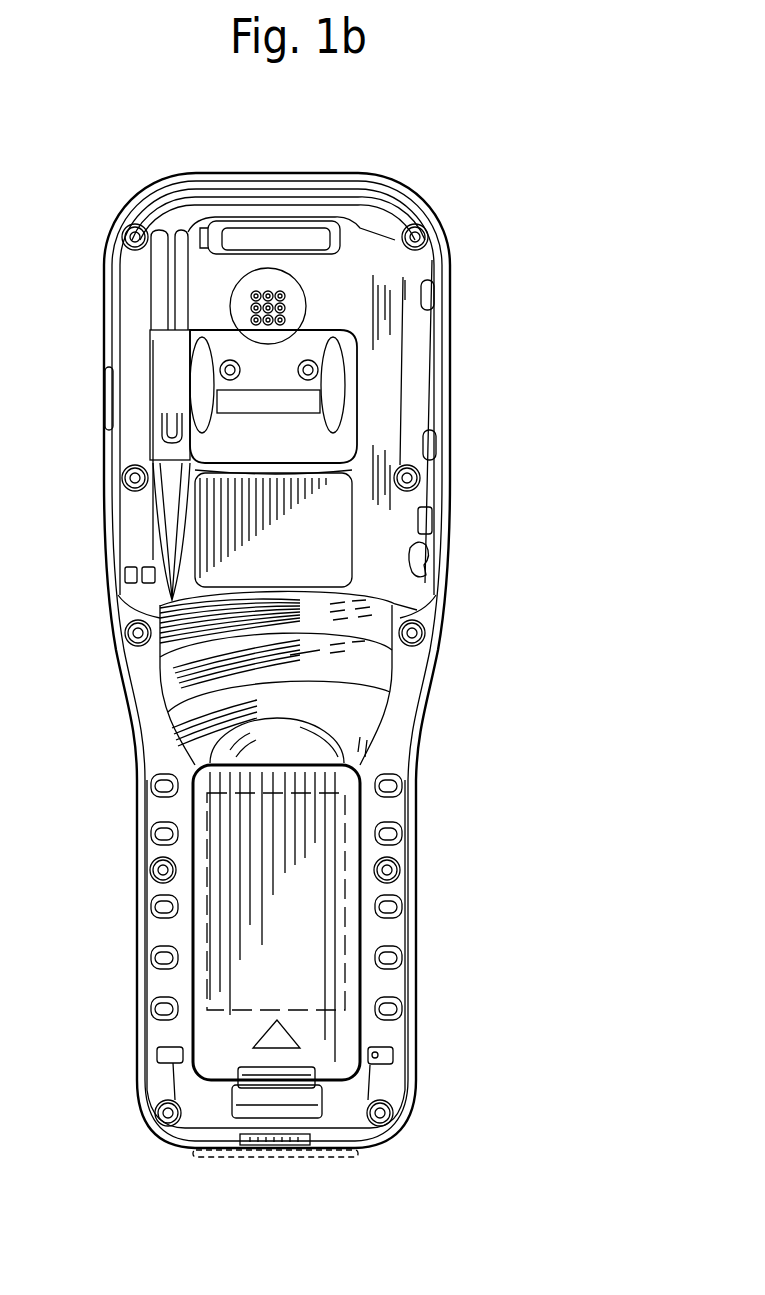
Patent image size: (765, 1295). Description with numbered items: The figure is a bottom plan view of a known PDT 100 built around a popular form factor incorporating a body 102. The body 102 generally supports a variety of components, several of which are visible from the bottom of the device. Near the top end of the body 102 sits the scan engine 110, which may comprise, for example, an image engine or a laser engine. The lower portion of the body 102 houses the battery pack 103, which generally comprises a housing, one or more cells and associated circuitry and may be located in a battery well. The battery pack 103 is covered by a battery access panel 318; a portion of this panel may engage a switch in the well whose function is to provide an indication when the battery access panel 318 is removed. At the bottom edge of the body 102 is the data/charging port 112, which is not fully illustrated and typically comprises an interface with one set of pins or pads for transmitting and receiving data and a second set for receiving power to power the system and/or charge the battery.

The PDT 100 is at (472, 162).
The body 102 is at (463, 236).
The scan engine 110 is at (262, 222).
The battery pack 103 is at (200, 842).
The battery access panel 318 is at (200, 1023).
The data/charging port 112 is at (288, 1158).